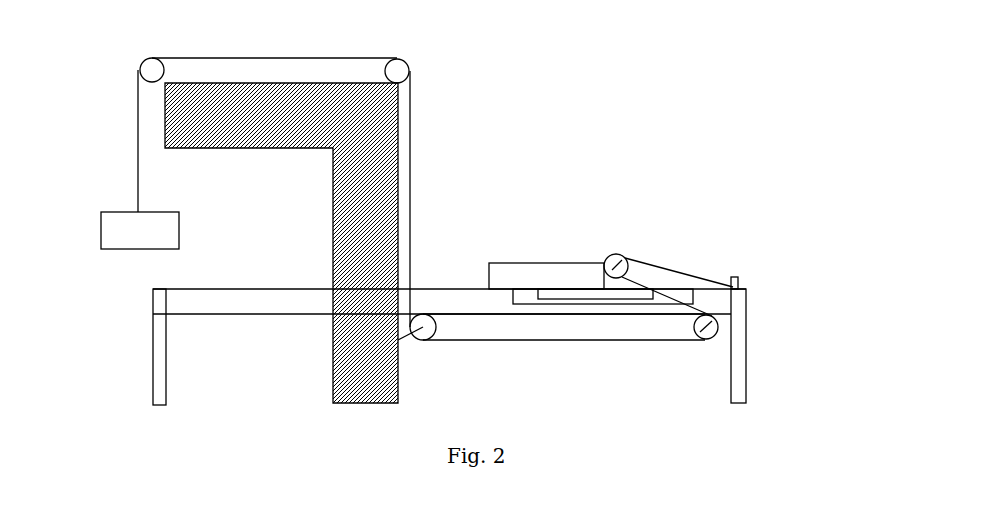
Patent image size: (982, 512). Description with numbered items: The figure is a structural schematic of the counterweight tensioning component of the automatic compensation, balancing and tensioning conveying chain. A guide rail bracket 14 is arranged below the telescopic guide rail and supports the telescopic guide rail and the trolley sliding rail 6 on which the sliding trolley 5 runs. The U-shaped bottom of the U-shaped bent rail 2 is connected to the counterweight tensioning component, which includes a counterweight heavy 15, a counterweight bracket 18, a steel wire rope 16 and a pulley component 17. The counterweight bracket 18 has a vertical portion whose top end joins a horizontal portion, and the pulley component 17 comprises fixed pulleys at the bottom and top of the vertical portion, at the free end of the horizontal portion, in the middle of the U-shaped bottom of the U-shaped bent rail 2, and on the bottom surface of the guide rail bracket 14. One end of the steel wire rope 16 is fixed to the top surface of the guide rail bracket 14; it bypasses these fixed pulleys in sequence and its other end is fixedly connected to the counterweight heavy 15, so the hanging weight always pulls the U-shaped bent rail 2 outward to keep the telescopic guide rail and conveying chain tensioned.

The U-shaped bent rail 2 is at (552, 263).
The sliding trolley 5 is at (637, 297).
The trolley sliding rail 6 is at (678, 298).
The guide rail bracket 14 is at (738, 347).
The counterweight heavy 15 is at (101, 212).
The steel wire rope 16 is at (408, 200).
The pulley component 17 is at (152, 70).
The counterweight bracket 18 is at (372, 160).